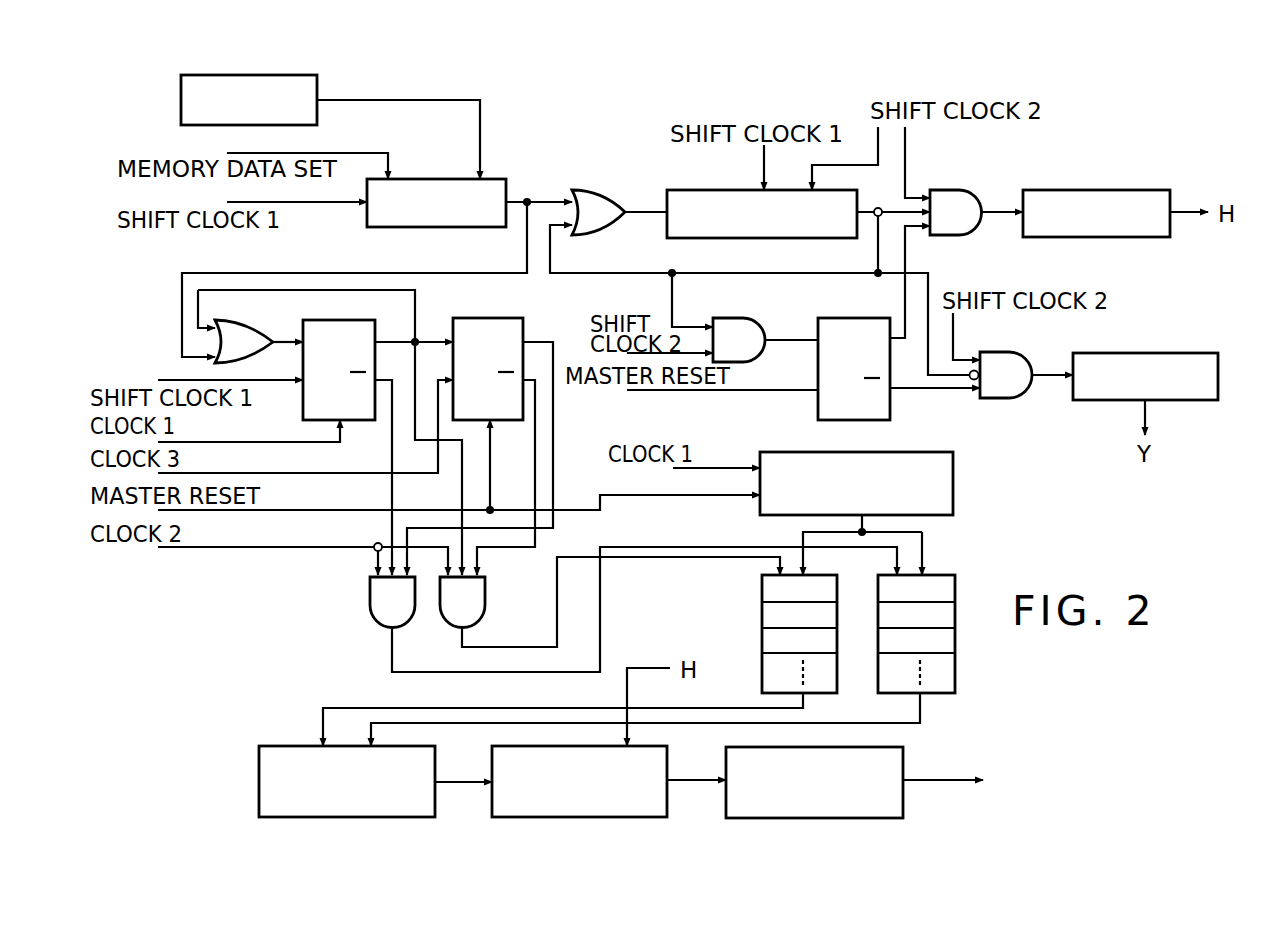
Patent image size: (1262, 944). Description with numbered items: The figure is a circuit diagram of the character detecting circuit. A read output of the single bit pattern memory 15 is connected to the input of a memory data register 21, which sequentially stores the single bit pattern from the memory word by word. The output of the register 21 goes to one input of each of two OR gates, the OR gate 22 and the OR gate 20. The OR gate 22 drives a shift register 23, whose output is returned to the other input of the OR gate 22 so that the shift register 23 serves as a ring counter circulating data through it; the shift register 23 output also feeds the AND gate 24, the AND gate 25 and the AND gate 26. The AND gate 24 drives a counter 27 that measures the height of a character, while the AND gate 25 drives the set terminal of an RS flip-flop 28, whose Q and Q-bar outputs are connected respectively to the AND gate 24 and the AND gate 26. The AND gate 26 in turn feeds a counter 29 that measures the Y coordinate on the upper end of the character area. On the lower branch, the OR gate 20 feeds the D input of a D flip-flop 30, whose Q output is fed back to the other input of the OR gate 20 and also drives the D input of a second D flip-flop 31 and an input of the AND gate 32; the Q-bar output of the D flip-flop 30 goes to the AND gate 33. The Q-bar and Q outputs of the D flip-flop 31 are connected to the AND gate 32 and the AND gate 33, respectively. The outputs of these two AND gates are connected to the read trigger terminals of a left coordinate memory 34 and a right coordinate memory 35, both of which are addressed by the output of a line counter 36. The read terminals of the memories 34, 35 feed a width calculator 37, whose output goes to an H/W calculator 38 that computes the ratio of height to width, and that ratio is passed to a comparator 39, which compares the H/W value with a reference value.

The single bit pattern memory 15 is at (183, 100).
The OR gate 20 is at (243, 320).
The memory data register 21 is at (429, 179).
The OR gate 22 is at (599, 189).
The shift register 23 is at (790, 238).
The AND gate 24 is at (949, 189).
The AND gate 25 is at (735, 318).
The AND gate 26 is at (990, 398).
The counter 27 is at (1096, 189).
The RS flip-flop 28 is at (854, 318).
The counter 29 is at (1161, 353).
The D flip-flop 30 is at (390, 325).
The D flip-flop 31 is at (524, 322).
The AND gate 32 is at (485, 614).
The AND gate 33 is at (370, 616).
The left coordinate memory 34 is at (761, 590).
The right coordinate memory 35 is at (955, 587).
The line counter 36 is at (908, 452).
The width calculator 37 is at (259, 752).
The H/W calculator 38 is at (667, 755).
The comparator 39 is at (903, 758).